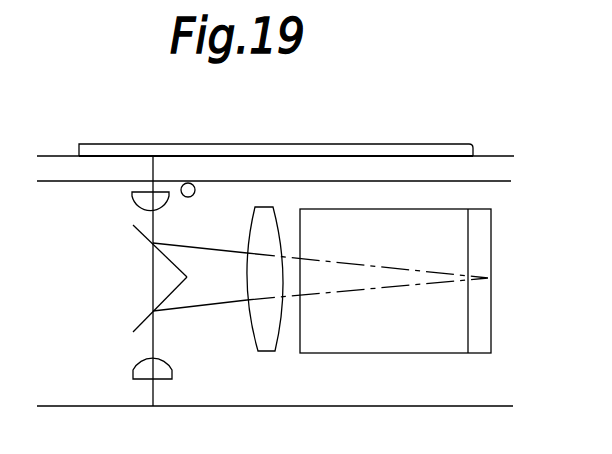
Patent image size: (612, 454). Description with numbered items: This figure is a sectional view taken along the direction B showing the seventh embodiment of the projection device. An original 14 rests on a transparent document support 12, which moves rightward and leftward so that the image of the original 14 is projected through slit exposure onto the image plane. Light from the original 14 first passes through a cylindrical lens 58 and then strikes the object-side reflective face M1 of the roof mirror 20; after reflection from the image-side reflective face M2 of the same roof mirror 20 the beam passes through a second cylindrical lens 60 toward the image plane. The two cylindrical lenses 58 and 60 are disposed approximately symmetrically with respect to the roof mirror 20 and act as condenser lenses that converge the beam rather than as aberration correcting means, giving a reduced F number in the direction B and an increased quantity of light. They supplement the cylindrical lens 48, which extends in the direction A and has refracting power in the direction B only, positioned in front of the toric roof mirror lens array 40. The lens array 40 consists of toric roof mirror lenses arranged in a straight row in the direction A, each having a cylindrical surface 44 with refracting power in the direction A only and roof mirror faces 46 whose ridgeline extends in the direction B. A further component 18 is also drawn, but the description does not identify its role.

The transparent document support 12 is at (67, 172).
The original 14 is at (253, 143).
The illumination lamp 18 is at (190, 197).
The roof mirror 20 is at (142, 278).
The object-side reflective face M1 is at (160, 251).
The image-side reflective face M2 is at (148, 316).
The toric roof mirror lens array 40 is at (409, 306).
The cylindrical surface 44 is at (302, 335).
The roof mirror faces 46 is at (486, 245).
The cylindrical lens 48 is at (258, 351).
The cylindrical lens 58 is at (138, 202).
The cylindrical lens 60 is at (167, 361).